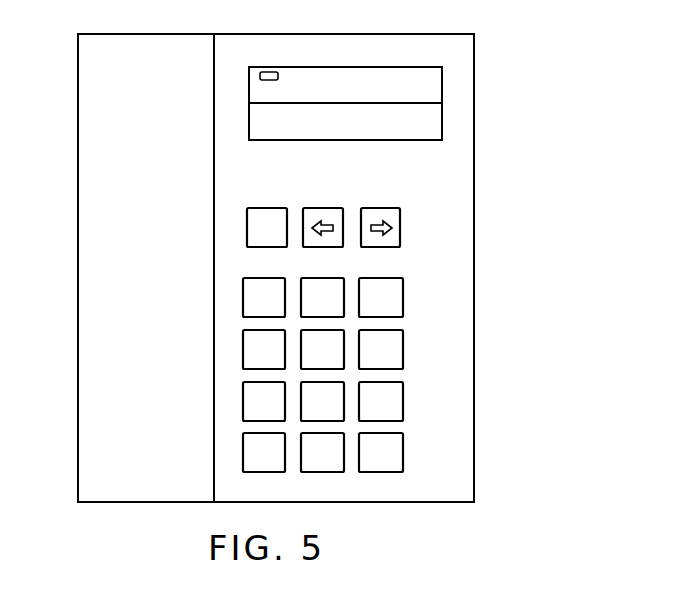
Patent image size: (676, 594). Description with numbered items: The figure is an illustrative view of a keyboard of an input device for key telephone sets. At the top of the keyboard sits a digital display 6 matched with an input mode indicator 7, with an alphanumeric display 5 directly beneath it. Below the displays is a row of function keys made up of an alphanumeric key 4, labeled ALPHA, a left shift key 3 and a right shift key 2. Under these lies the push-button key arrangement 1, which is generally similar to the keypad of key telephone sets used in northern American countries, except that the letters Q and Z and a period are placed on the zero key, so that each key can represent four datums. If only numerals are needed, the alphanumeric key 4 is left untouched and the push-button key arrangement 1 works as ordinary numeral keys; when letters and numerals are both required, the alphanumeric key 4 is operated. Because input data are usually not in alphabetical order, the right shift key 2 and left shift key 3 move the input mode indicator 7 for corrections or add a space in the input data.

The push-button key arrangement 1 is at (416, 300).
The right shift key 2 is at (372, 212).
The left shift key 3 is at (327, 212).
The alphanumeric key 4 is at (275, 212).
The alphanumeric display 5 is at (435, 113).
The digital display 6 is at (445, 81).
The input mode indicator 7 is at (265, 71).